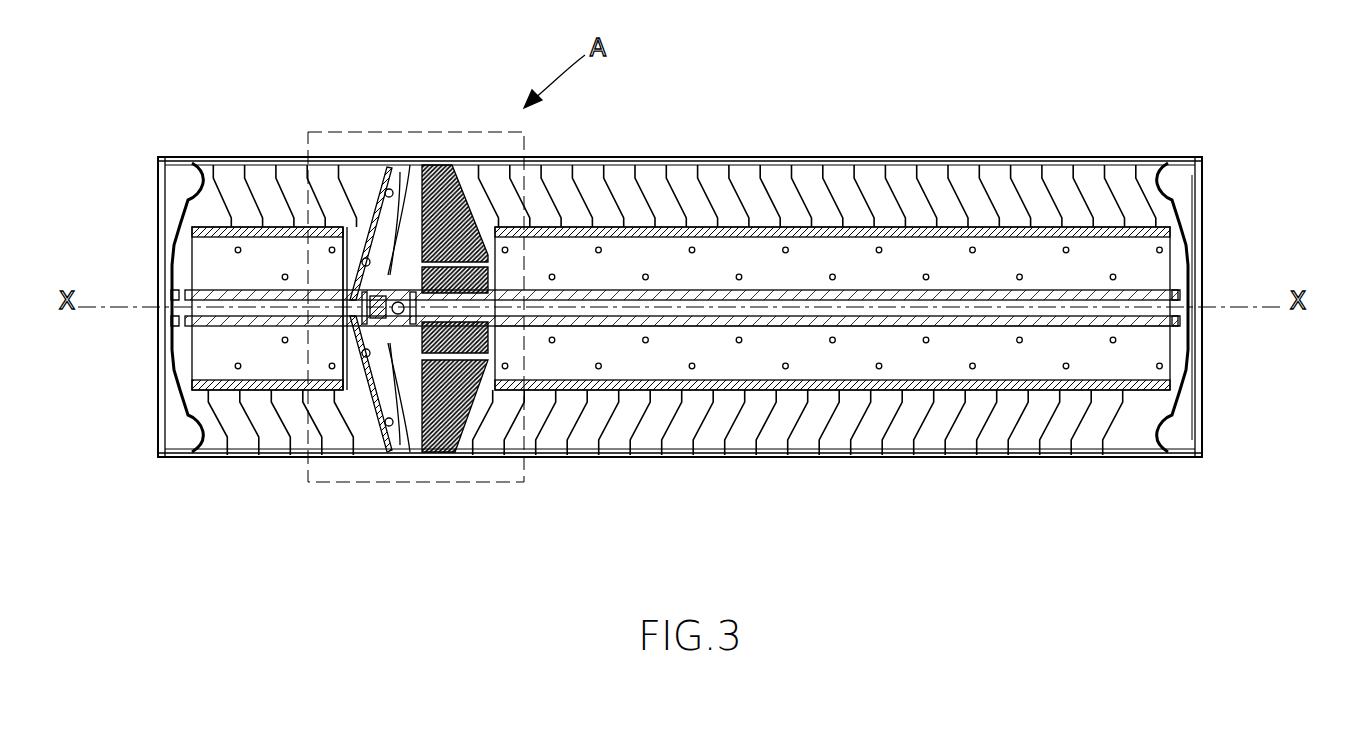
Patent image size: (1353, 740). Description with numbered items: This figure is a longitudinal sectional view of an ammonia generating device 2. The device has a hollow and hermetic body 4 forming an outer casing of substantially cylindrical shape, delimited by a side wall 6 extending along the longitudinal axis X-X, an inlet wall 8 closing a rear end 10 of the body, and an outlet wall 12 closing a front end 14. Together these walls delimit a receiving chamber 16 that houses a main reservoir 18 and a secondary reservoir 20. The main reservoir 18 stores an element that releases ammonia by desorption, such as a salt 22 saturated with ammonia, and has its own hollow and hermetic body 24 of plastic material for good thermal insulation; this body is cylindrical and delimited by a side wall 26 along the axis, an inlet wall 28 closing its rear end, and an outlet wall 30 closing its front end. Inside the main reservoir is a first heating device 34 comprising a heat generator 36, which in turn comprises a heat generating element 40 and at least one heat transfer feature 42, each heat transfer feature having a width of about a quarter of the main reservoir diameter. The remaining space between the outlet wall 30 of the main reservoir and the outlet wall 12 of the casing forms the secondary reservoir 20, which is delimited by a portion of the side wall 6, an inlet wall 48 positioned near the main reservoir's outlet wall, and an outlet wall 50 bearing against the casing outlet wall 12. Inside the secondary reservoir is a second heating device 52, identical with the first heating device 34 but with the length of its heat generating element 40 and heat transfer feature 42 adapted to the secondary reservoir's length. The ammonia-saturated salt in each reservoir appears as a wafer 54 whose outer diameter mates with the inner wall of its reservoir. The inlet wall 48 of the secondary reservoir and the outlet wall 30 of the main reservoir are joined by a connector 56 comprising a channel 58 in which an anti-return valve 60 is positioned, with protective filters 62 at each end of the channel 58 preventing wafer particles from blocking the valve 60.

The ammonia generating device 2 is at (1082, 128).
The hollow and hermetic body 4 is at (890, 128).
The side wall 6 is at (618, 158).
The inlet wall 8 is at (1198, 250).
The rear end 10 is at (1253, 203).
The outlet wall 12 is at (158, 405).
The front end 14 is at (120, 230).
The receiving chamber 16 is at (1055, 158).
The main reservoir 18 is at (870, 447).
The secondary reservoir 20 is at (248, 157).
The salt saturated with ammonia 22 is at (750, 158).
The hollow and hermetic body 24 is at (965, 158).
The side wall 26 is at (663, 158).
The inlet wall 28 is at (1157, 158).
The outlet wall 30 is at (460, 157).
The first heating device 34 is at (1150, 355).
The heat generator 36 is at (677, 368).
The heat generating element 40 is at (1195, 303).
The heat transfer feature 42 is at (1077, 380).
The inlet wall 48 is at (370, 157).
The outlet wall 50 is at (209, 157).
The second heating device 52 is at (225, 352).
The wafer 54 is at (838, 158).
The connector 56 is at (372, 345).
The channel 58 is at (398, 430).
The anti-return valve 60 is at (405, 262).
The protective filter 62 is at (340, 410).